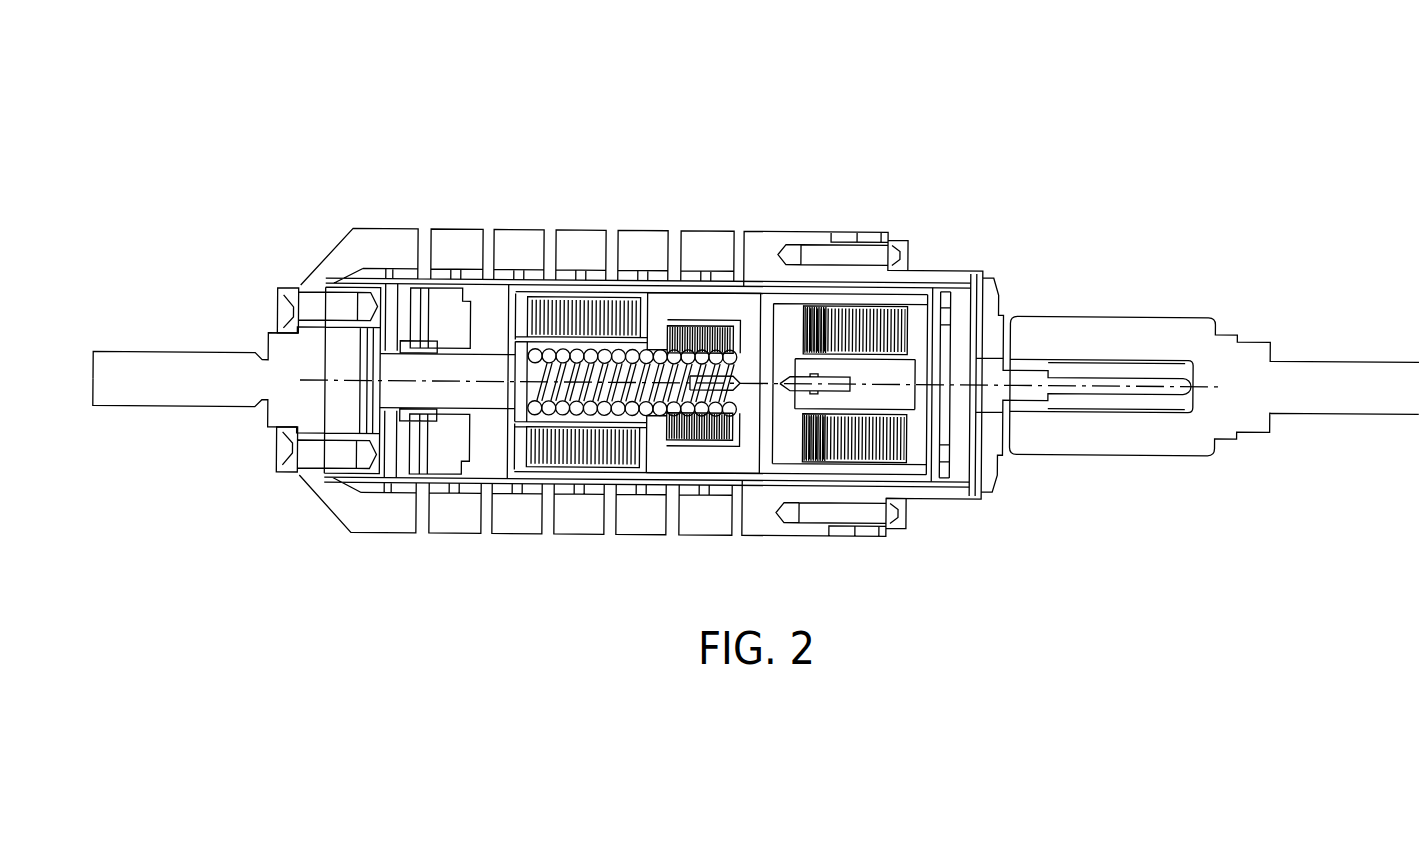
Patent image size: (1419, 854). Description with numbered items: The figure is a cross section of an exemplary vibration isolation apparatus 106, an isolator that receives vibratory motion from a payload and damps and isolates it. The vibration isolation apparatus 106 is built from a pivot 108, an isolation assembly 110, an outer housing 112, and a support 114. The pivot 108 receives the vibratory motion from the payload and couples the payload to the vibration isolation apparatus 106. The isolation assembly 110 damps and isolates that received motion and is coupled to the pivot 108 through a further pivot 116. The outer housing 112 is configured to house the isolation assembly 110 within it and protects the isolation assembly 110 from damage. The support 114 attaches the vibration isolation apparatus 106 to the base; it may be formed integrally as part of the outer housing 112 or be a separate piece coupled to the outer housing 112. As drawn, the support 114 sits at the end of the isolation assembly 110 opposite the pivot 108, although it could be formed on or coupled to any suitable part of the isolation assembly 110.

The vibration isolation apparatus 106 is at (755, 282).
The pivot 108 is at (1214, 386).
The isolation assembly 110 is at (862, 384).
The outer housing 112 is at (623, 382).
The support 114 is at (304, 379).
The pivot 116 is at (1086, 386).